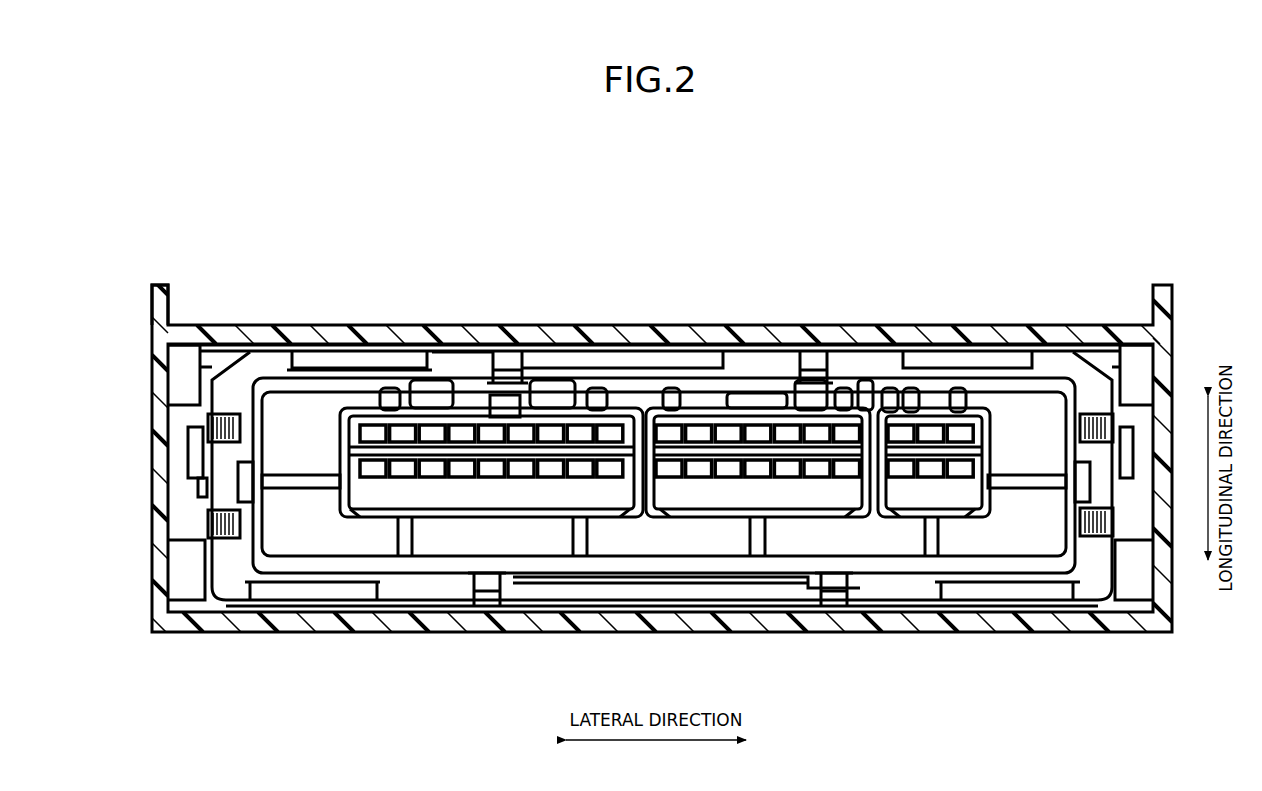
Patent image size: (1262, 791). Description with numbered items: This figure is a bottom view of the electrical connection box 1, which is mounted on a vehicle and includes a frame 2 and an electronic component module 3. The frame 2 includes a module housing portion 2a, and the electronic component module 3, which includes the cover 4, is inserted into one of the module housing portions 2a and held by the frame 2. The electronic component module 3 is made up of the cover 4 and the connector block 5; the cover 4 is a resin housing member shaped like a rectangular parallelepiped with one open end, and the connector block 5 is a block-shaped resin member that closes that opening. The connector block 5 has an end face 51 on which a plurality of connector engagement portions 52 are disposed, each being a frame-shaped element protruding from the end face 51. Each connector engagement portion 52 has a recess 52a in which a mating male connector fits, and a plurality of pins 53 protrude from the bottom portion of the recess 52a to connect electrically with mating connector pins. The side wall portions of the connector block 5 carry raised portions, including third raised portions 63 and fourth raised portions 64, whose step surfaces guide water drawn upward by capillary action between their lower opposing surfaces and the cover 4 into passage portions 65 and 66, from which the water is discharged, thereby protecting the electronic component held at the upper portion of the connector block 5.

The electrical connection box 1 is at (182, 176).
The frame 2 is at (146, 368).
The module housing portion 2a is at (196, 305).
The electronic component module 3 is at (258, 340).
The cover 4 is at (369, 350).
The connector block 5 is at (454, 354).
The end face 51 is at (305, 430).
The connector engagement portion 52 is at (612, 410).
The recess 52a is at (462, 405).
The pin 53 is at (961, 430).
The third raised portion 63 is at (621, 354).
The fourth raised portion 64 is at (388, 360).
The passage portion 65 is at (233, 430).
The passage portion 66 is at (507, 374).